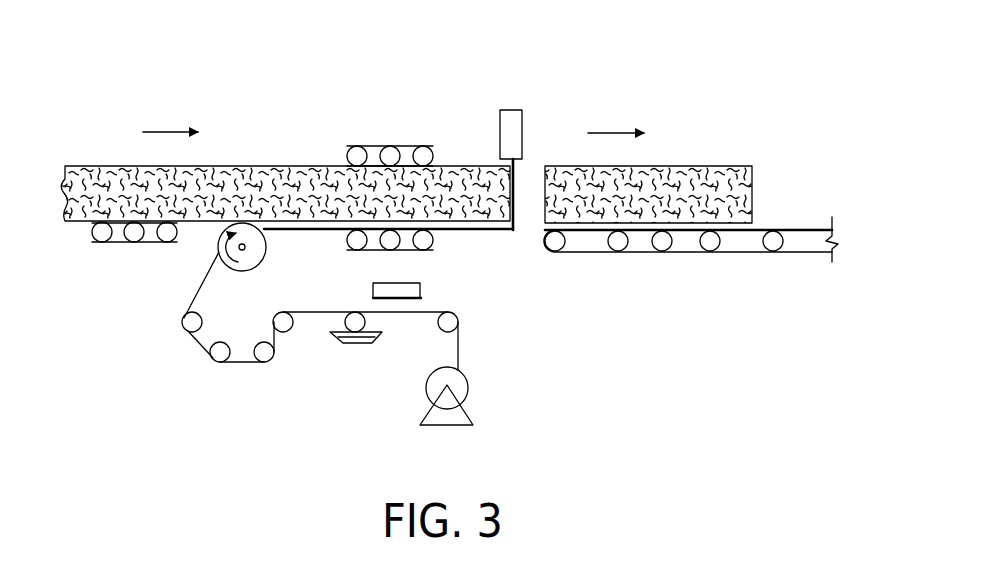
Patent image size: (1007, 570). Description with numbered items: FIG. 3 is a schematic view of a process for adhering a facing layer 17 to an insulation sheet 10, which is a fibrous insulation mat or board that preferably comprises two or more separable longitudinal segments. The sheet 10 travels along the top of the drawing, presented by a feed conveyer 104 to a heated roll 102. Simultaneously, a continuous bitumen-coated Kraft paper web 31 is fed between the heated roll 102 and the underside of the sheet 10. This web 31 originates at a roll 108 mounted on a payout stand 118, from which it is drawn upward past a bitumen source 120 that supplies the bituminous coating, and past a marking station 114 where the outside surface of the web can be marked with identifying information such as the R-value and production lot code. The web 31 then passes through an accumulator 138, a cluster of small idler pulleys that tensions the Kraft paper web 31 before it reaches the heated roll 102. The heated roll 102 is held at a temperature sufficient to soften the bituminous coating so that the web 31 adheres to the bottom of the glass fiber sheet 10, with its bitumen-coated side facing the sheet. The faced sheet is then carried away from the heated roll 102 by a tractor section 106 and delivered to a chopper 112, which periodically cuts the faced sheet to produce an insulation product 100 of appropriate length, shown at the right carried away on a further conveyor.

The insulation sheet 10 is at (213, 166).
The insulation product 100 is at (768, 156).
The heated roll 102 is at (260, 253).
The feed conveyer 104 is at (118, 242).
The tractor section 106 is at (417, 249).
The roll 108 is at (460, 386).
The chopper 112 is at (522, 118).
The marking station 114 is at (418, 292).
The payout stand 118 is at (462, 415).
The bitumen source 120 is at (347, 344).
The accumulator 138 is at (220, 354).
The facing layer 17 is at (458, 343).
The bitumen-coated Kraft paper web 31 is at (197, 289).